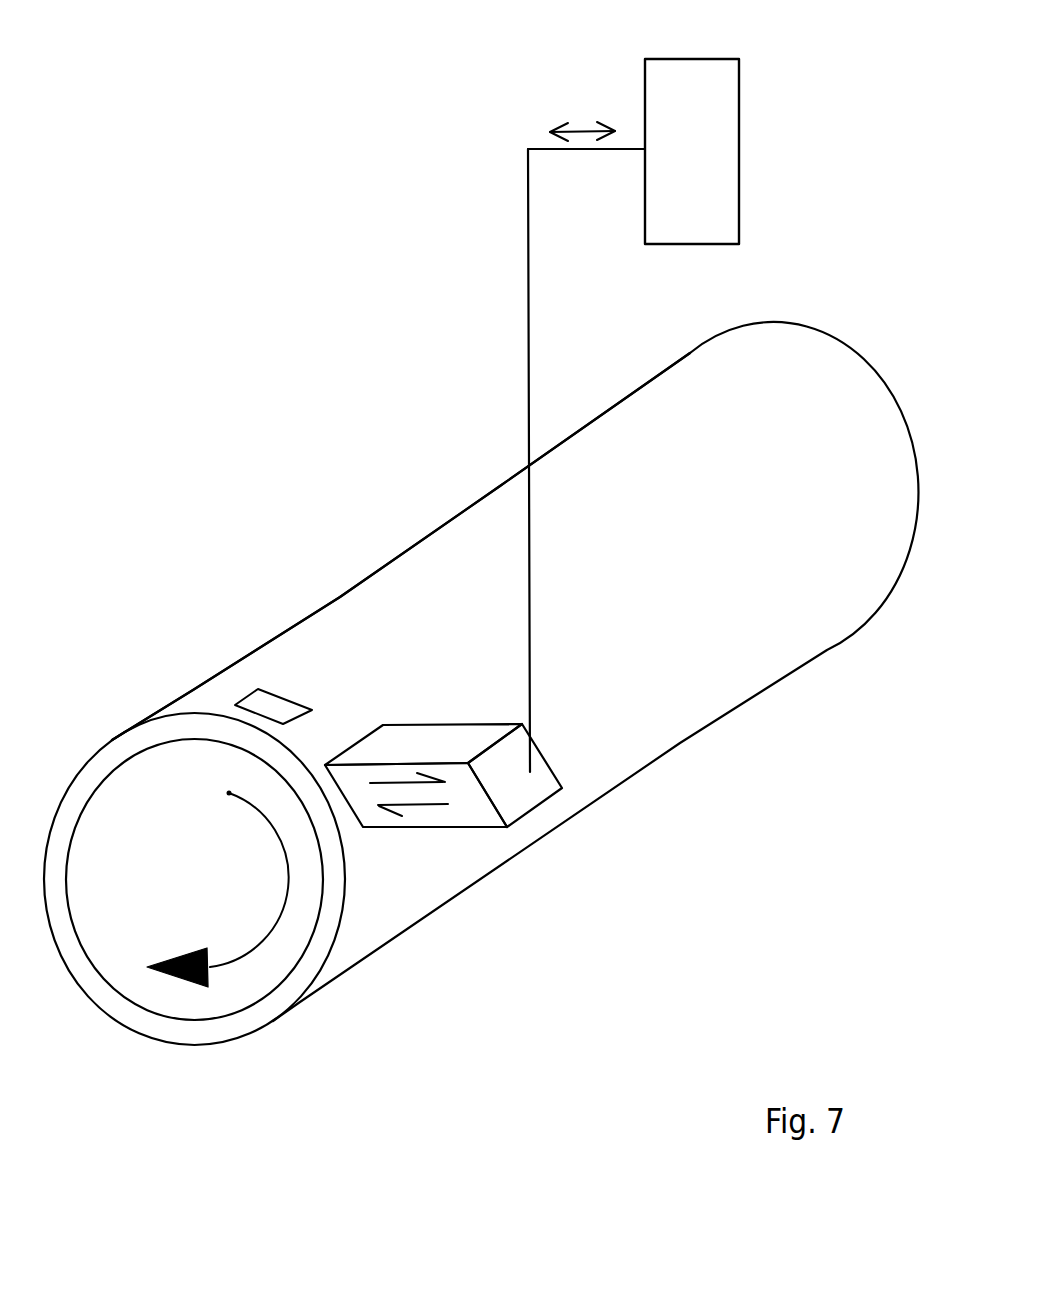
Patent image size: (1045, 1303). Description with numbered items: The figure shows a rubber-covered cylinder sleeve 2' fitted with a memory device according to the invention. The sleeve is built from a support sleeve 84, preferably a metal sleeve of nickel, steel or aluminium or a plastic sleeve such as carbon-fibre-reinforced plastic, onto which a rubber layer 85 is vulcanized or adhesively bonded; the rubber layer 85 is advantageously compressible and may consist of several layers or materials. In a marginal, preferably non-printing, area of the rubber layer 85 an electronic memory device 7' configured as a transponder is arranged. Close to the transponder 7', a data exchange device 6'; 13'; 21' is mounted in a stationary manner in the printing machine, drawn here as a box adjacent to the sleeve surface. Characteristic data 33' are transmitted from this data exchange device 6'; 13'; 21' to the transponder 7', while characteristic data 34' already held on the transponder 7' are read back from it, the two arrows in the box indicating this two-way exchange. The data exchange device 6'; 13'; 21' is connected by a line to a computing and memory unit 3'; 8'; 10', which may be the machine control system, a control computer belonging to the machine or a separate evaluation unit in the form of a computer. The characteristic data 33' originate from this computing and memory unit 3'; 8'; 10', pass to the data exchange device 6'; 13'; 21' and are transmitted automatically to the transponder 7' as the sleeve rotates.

The rubber-covered cylinder sleeve 2' is at (481, 753).
The computing and memory unit 3' is at (724, 415).
The data exchange device 6' is at (653, 817).
The electronic memory device 7' is at (188, 666).
The computing and memory unit 8' is at (724, 415).
The computing and memory unit 10' is at (724, 415).
The data exchange device 13' is at (653, 817).
The data exchange device 21' is at (653, 817).
The characteristic data 33' is at (581, 860).
The characteristic data 34' is at (256, 648).
The support sleeve 84 is at (255, 1008).
The rubber layer 85 is at (511, 548).